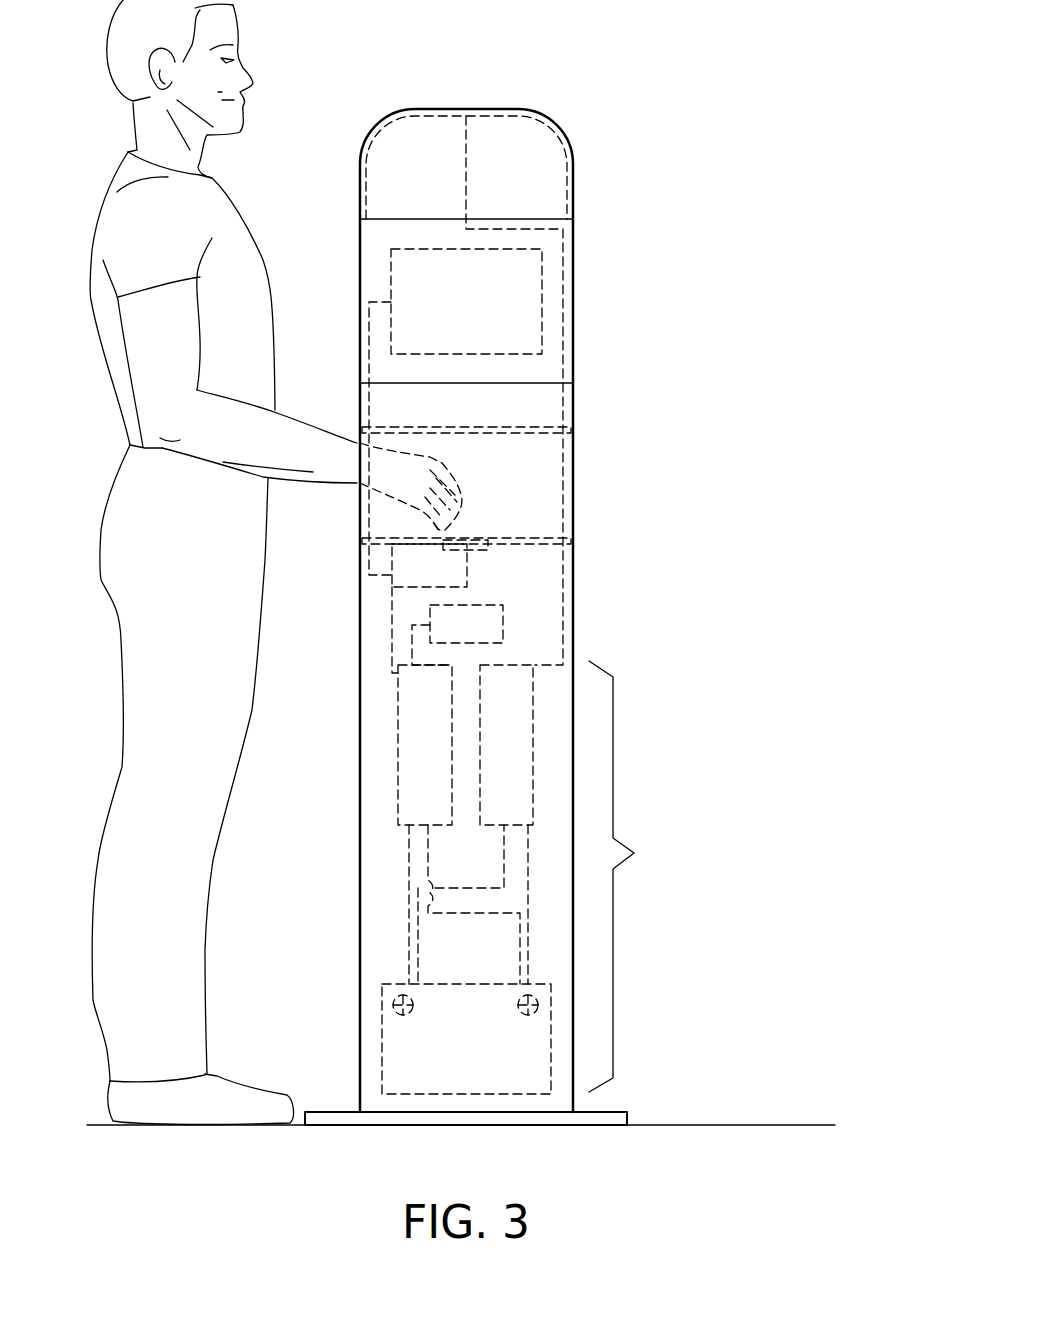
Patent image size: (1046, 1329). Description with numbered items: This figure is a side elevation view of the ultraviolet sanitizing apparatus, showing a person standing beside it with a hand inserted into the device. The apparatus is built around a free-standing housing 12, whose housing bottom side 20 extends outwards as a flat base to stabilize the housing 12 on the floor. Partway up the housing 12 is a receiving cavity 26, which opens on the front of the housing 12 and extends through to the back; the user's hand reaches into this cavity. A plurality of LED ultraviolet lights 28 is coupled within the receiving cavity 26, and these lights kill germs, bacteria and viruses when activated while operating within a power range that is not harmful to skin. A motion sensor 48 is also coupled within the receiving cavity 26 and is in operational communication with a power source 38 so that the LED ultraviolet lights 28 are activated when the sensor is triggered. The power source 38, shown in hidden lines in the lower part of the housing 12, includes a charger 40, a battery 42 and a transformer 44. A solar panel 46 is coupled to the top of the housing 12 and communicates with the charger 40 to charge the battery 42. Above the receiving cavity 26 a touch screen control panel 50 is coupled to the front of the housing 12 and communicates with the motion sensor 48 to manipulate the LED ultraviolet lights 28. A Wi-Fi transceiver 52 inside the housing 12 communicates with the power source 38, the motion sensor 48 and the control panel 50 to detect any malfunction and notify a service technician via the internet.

The housing 12 is at (358, 962).
The housing bottom side 20 is at (625, 1112).
The receiving cavity 26 is at (532, 492).
The LED ultraviolet lights 28 is at (522, 427).
The power source 38 is at (548, 876).
The charger 40 is at (502, 697).
The battery 42 is at (465, 1060).
The transformer 44 is at (412, 803).
The solar panel 46 is at (507, 118).
The motion sensor 48 is at (480, 550).
The touch screen control panel 50 is at (468, 303).
The Wi-Fi transceiver 52 is at (482, 626).